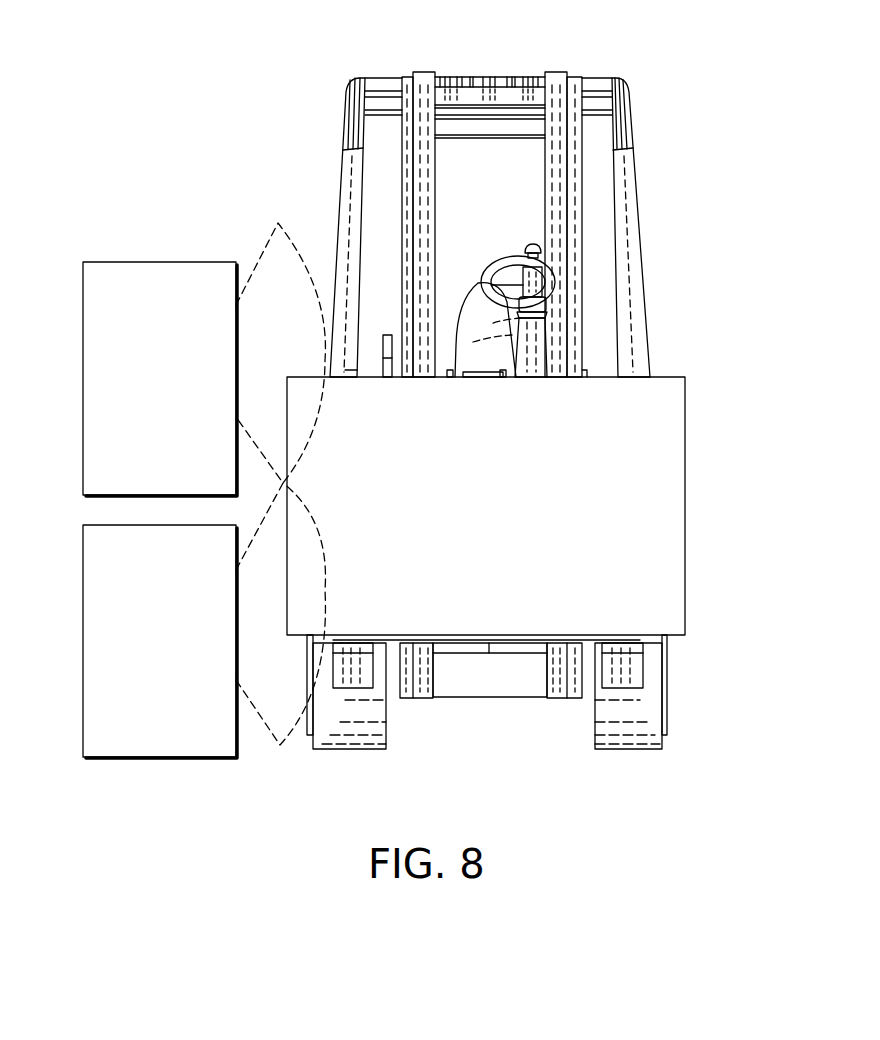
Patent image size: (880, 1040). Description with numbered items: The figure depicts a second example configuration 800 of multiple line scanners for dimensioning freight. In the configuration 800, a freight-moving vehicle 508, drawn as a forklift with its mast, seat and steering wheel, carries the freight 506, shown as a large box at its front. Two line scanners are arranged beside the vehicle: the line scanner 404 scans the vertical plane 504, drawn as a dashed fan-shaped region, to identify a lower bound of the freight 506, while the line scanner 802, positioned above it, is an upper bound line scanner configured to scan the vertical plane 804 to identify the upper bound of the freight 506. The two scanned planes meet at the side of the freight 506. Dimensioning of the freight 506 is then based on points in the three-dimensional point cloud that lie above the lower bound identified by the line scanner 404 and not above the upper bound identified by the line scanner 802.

The configuration 800 is at (764, 36).
The line scanner 802 is at (83, 378).
The line scanner 404 is at (83, 640).
The vertical plane 804 is at (268, 243).
The vertical plane 504 is at (268, 734).
The freight-moving vehicle 508 is at (640, 232).
The freight 506 is at (685, 507).